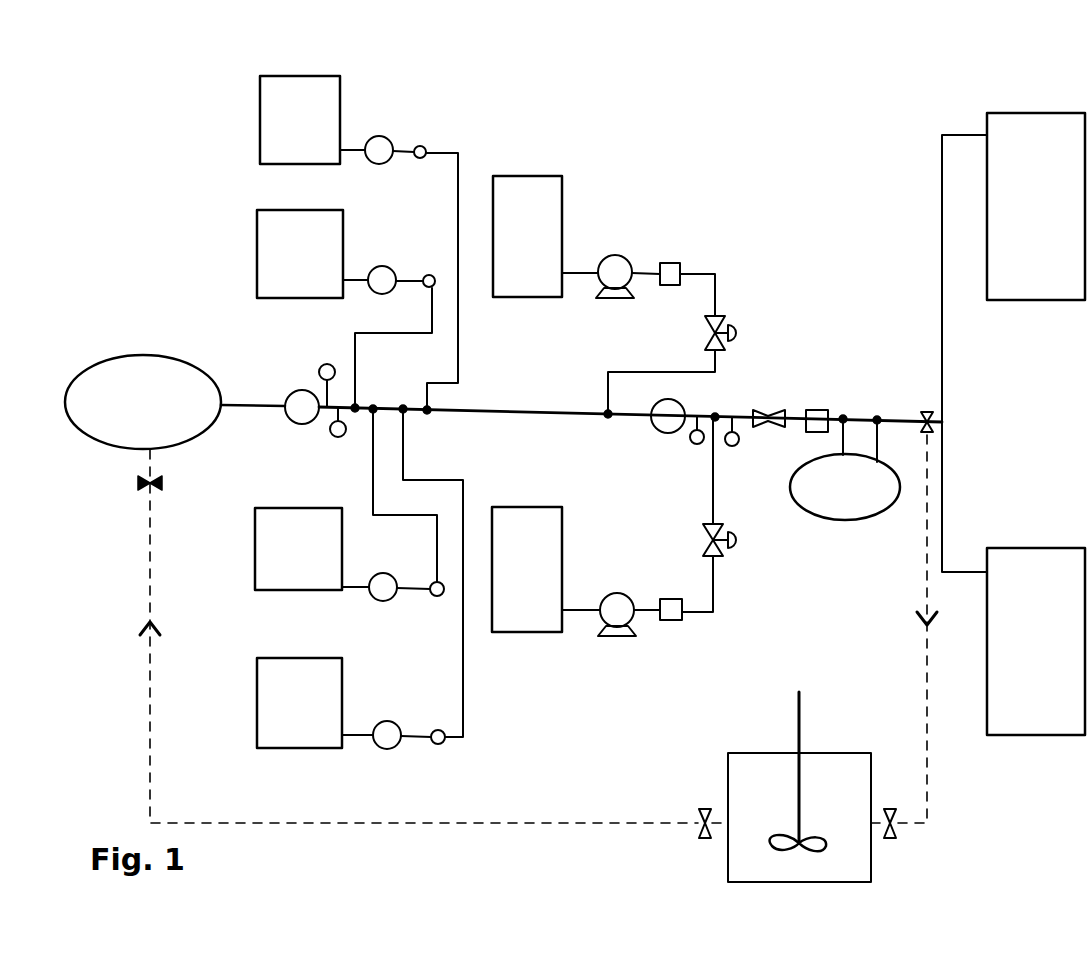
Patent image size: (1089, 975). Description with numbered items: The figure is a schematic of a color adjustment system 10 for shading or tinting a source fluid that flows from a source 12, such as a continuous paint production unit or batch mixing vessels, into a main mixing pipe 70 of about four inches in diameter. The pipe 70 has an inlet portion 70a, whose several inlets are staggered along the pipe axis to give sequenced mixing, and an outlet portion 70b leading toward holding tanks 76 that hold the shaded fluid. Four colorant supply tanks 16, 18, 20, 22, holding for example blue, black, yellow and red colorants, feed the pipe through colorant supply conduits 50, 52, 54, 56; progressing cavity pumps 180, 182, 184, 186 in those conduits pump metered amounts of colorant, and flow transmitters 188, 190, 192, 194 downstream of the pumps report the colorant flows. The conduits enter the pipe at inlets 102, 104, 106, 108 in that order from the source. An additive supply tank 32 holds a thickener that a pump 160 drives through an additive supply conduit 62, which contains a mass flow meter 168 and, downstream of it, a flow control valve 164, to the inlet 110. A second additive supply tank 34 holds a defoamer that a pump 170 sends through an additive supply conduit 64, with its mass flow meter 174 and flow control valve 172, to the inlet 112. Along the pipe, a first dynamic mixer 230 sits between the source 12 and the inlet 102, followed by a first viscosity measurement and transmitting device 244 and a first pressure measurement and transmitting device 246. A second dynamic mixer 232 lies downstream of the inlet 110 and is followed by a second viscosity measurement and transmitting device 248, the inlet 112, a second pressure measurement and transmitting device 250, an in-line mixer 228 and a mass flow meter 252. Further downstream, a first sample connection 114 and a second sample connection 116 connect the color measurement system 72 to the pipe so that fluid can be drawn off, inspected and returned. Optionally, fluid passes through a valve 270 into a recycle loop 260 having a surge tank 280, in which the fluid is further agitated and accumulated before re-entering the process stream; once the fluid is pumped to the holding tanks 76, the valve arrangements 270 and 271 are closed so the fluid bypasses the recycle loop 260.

The color adjustment system 10 is at (853, 103).
The source 12 is at (110, 430).
The colorant supply tank 16 is at (330, 248).
The colorant supply tank 18 is at (310, 582).
The colorant supply tank 20 is at (302, 748).
The colorant supply tank 22 is at (330, 100).
The additive supply tank 32 is at (555, 186).
The additive supply tank 34 is at (560, 528).
The colorant supply conduit 50 is at (375, 333).
The colorant supply conduit 52 is at (420, 518).
The colorant supply conduit 54 is at (463, 690).
The colorant supply conduit 56 is at (458, 165).
The additive supply conduit 62 is at (715, 270).
The additive supply conduit 64 is at (712, 498).
The main mixing pipe 70 is at (517, 409).
The inlet portion 70a is at (253, 410).
The outlet portion 70b is at (903, 424).
The color measurement system 72 is at (850, 520).
The holding tanks 76 is at (1020, 130).
The inlet 102 is at (355, 420).
The inlet 104 is at (373, 400).
The inlet 106 is at (405, 412).
The inlet 108 is at (427, 405).
The inlet 110 is at (599, 407).
The inlet 112 is at (718, 412).
The first sample connection 114 is at (845, 415).
The second sample connection 116 is at (878, 418).
The pump 160 is at (612, 274).
The flow control valve 164 is at (725, 318).
The mass flow meter 168 is at (678, 265).
The pump 170 is at (608, 595).
The flow control valve 172 is at (725, 552).
The mass flow meter 174 is at (680, 620).
The progressing cavity pump 180 is at (388, 266).
The progressing cavity pump 182 is at (385, 601).
The progressing cavity pump 184 is at (389, 749).
The progressing cavity pump 186 is at (385, 137).
The flow transmitter 188 is at (437, 274).
The flow transmitter 190 is at (432, 596).
The flow transmitter 192 is at (443, 743).
The flow transmitter 194 is at (425, 145).
The in-line mixer 228 is at (770, 410).
The first dynamic mixer 230 is at (295, 395).
The second dynamic mixer 232 is at (652, 427).
The first viscosity measurement and transmitting device 244 is at (325, 362).
The first pressure measurement and transmitting device 246 is at (330, 434).
The second viscosity measurement and transmitting device 248 is at (697, 445).
The second pressure measurement and transmitting device 250 is at (735, 447).
The mass flow meter 252 is at (817, 410).
The recycle loop 260 is at (927, 778).
The valve 270 is at (937, 420).
The valve arrangement 271 is at (903, 832).
The surge tank 280 is at (871, 865).